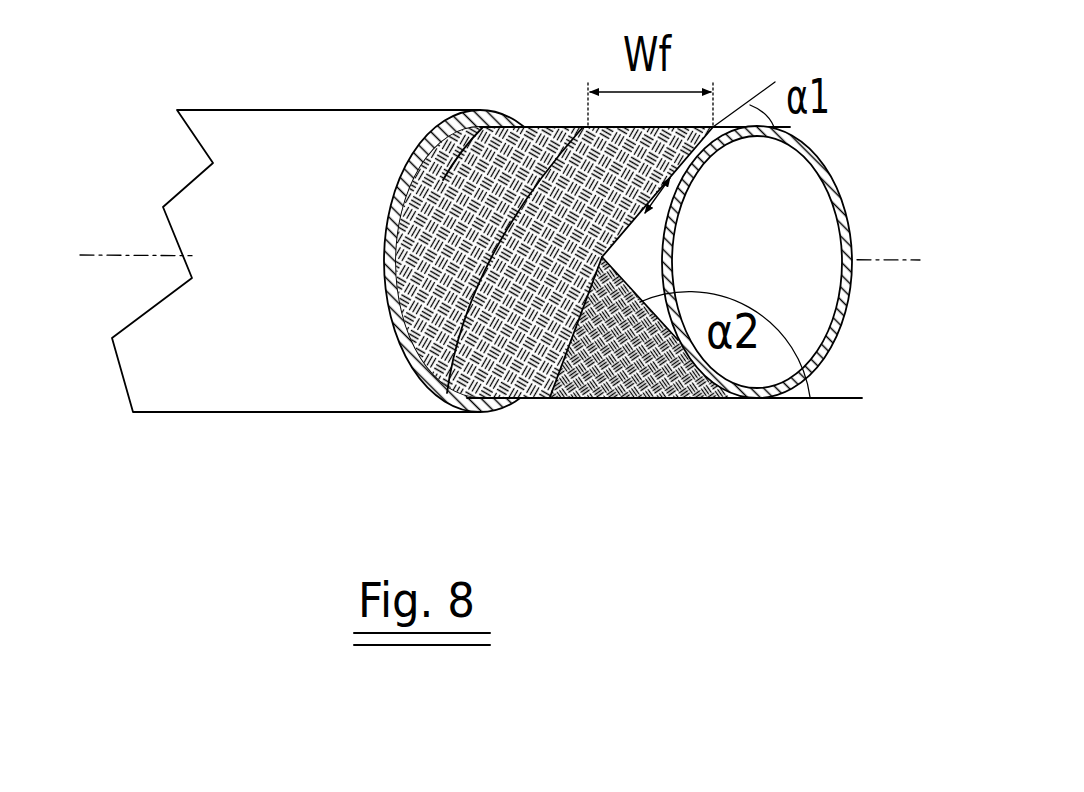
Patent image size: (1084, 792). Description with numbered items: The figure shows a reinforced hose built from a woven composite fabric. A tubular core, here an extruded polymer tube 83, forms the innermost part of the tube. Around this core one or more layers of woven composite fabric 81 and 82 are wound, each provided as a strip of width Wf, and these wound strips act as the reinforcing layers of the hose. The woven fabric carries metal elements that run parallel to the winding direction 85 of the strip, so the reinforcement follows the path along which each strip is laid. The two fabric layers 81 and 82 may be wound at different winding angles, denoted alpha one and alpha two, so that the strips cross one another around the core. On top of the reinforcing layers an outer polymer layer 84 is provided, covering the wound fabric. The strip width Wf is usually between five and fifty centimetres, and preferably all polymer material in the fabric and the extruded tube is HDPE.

The woven composite fabric layer 81 is at (648, 370).
The woven composite fabric layer 82 is at (490, 377).
The extruded polymer tube 83 is at (843, 200).
The outer polymer layer 84 is at (247, 125).
The winding direction 85 is at (680, 202).